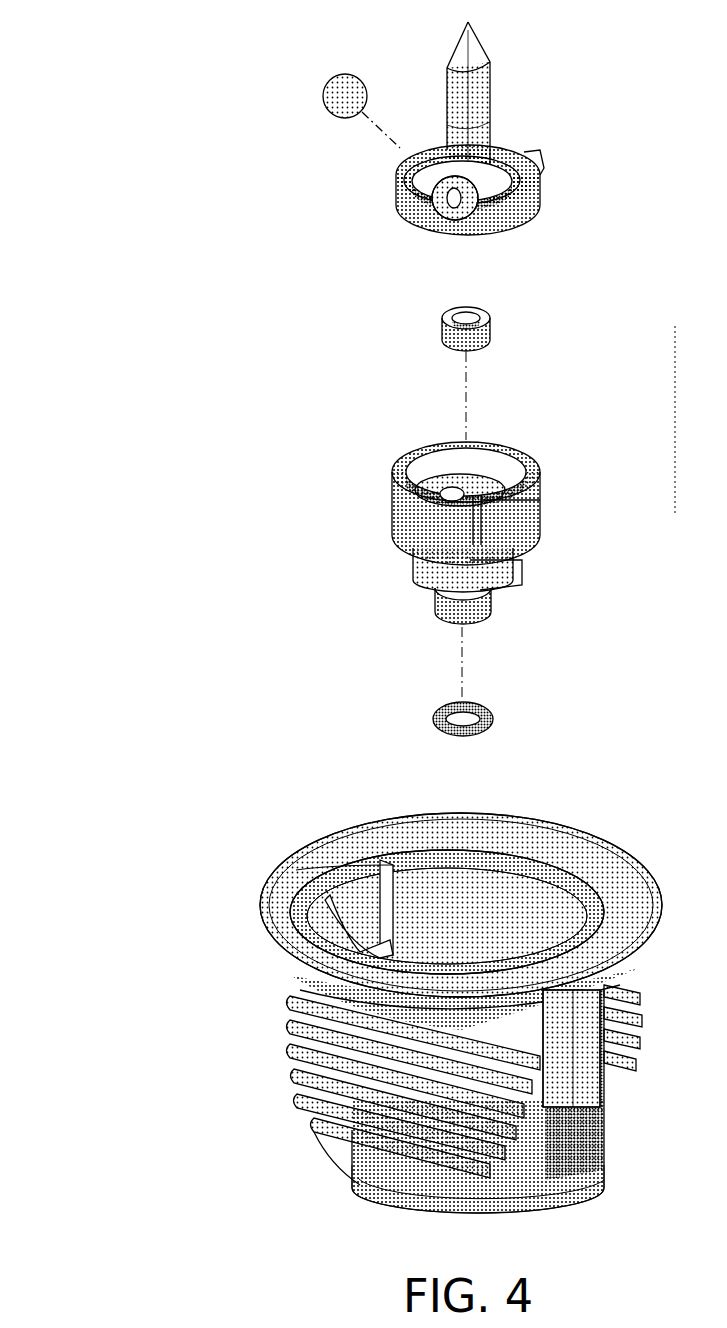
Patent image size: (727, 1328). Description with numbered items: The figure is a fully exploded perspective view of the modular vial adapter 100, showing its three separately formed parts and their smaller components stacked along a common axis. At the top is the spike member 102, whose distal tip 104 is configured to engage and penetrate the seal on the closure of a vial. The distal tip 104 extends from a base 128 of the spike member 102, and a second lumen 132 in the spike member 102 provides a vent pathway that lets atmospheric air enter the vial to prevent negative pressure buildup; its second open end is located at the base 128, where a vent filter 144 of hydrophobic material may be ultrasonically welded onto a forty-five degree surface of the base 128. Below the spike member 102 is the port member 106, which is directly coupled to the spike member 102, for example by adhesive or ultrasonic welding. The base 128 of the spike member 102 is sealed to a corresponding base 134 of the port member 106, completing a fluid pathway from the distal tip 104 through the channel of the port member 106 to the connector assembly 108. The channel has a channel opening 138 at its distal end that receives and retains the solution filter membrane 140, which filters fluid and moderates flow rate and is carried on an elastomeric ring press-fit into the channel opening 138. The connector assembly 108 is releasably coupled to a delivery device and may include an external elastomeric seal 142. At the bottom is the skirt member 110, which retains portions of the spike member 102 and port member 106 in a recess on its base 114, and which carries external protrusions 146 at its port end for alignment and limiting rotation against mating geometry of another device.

The modular vial adapter 100 is at (148, 152).
The spike member 102 is at (571, 20).
The distal tip 104 is at (450, 72).
The port member 106 is at (570, 306).
The connector assembly 108 is at (437, 592).
The skirt member 110 is at (202, 850).
The base 114 is at (455, 915).
The base 128 is at (488, 232).
The second lumen 132 is at (447, 200).
The base 134 is at (392, 483).
The channel opening 138 is at (452, 494).
The solution filter membrane 140 is at (443, 332).
The external elastomeric seal 142 is at (436, 714).
The vent filter 144 is at (330, 86).
The external protrusions 146 is at (368, 1198).